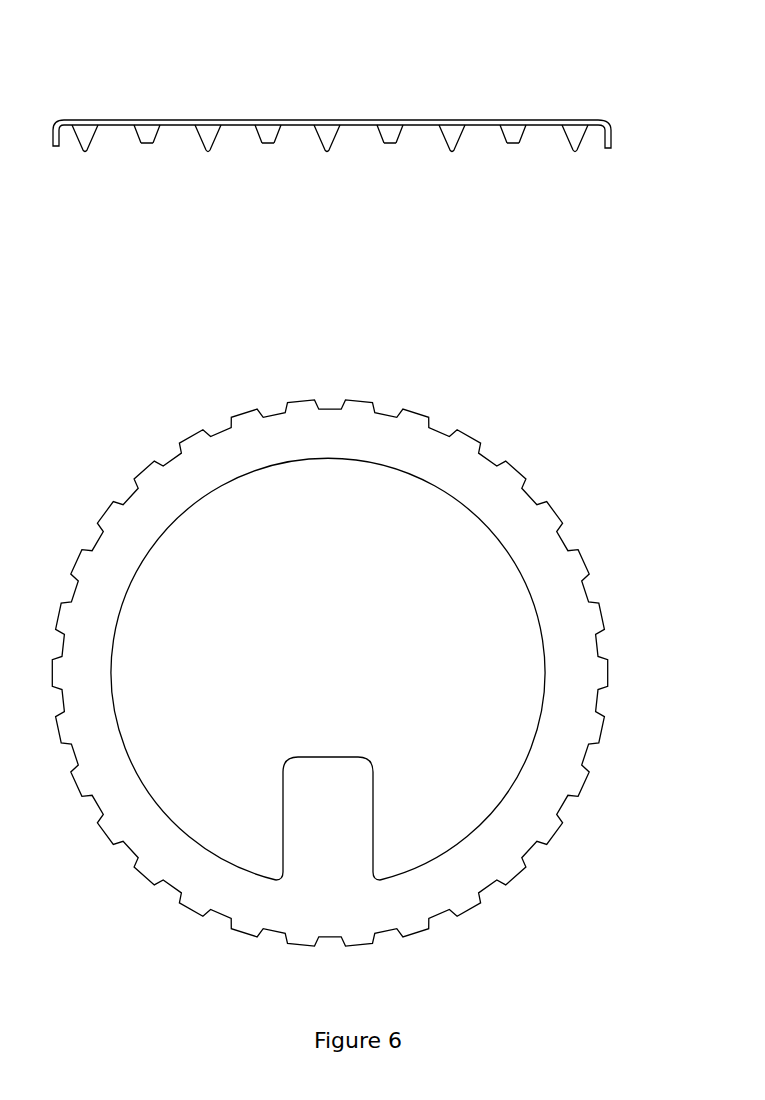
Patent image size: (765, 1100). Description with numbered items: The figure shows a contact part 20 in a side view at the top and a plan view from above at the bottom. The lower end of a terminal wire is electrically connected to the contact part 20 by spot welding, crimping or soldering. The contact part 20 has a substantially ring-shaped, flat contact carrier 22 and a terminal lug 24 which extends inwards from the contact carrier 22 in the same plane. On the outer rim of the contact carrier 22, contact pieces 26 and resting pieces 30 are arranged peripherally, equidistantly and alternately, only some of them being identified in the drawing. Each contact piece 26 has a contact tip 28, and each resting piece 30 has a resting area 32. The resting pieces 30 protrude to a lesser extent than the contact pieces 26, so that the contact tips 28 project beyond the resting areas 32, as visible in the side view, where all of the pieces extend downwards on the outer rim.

The contact part 20 is at (220, 78).
The contact carrier 22 is at (363, 120).
The terminal lug 24 is at (335, 797).
The contact piece 26 is at (322, 148).
The contact tip 28 is at (327, 157).
The resting piece 30 is at (402, 145).
The resting area 32 is at (394, 150).